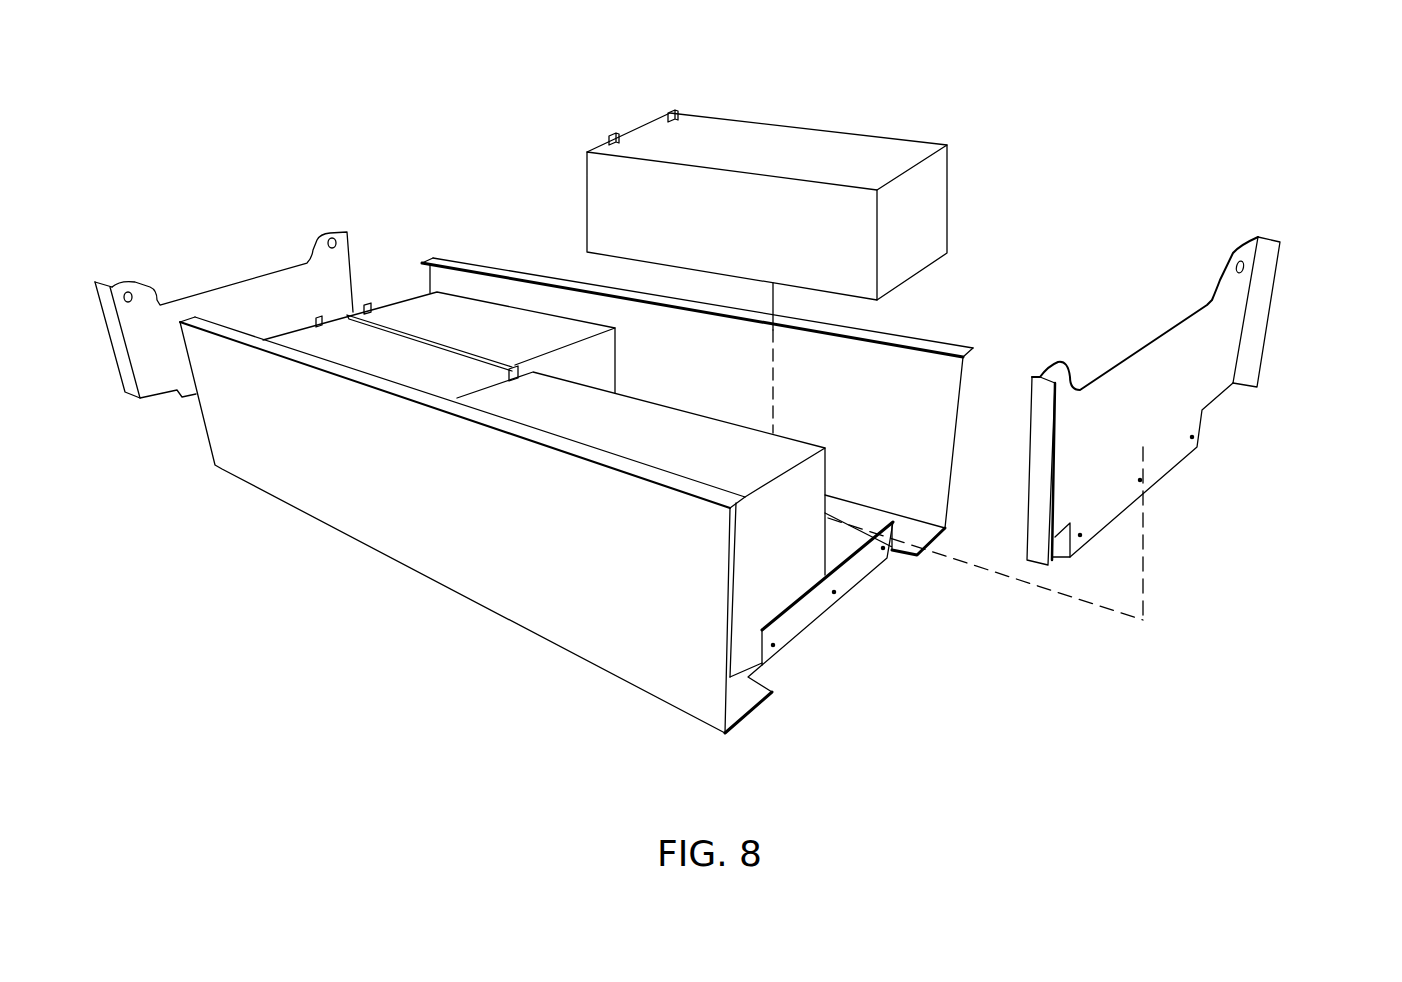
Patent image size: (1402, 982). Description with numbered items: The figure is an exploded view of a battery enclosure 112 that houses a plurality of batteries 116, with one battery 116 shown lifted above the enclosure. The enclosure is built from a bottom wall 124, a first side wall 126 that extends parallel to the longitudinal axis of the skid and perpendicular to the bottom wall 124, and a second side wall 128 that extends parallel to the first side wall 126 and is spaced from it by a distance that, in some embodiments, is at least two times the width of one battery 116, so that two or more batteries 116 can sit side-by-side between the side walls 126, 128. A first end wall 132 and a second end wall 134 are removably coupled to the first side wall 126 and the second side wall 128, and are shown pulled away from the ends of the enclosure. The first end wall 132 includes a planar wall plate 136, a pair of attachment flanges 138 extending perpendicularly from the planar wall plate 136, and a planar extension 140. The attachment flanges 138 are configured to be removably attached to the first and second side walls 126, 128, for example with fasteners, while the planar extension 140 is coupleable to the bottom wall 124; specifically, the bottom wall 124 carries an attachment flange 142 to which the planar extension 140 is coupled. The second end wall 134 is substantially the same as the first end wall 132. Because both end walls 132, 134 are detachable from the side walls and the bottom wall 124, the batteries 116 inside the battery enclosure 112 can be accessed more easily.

The battery enclosure 112 is at (1077, 96).
The battery 116 is at (563, 167).
The bottom wall 124 is at (746, 701).
The first side wall 126 is at (558, 518).
The second side wall 128 is at (934, 322).
The first end wall 132 is at (1200, 395).
The second end wall 134 is at (246, 285).
The planar wall plate 136 is at (1164, 398).
The attachment flange 138 is at (1284, 229).
The planar extension 140 is at (1153, 499).
The attachment flange 142 is at (851, 584).